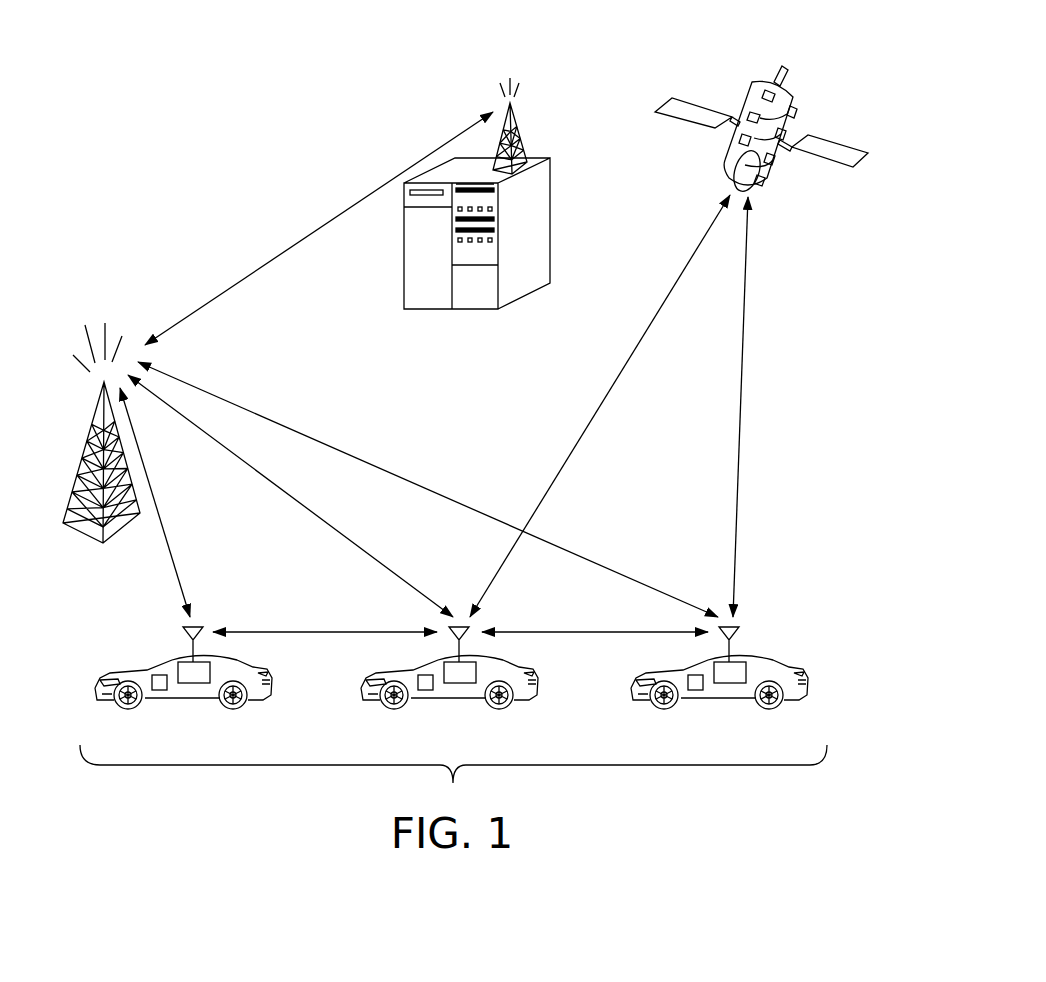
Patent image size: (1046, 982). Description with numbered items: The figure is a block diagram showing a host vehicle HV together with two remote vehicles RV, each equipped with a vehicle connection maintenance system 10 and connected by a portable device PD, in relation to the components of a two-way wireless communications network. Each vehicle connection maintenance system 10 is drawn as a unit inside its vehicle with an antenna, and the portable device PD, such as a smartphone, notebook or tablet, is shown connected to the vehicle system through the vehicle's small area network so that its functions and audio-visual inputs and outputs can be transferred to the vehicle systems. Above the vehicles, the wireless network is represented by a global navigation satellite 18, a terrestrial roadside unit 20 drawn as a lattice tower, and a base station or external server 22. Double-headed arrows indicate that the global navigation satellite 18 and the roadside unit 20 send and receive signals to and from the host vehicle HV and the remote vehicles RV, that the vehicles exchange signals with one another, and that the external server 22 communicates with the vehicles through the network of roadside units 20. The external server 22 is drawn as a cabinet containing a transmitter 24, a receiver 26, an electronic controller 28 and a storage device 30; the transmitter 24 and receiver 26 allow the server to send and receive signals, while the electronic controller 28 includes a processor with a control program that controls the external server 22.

The vehicle connection maintenance system 10 is at (193, 683).
The global navigation satellite 18 is at (740, 62).
The roadside unit 20 is at (80, 470).
The external server 22 is at (473, 309).
The transmitter 24 is at (498, 197).
The receiver 26 is at (498, 236).
The electronic controller 28 is at (415, 203).
The storage device 30 is at (487, 288).
The portable device PD is at (160, 690).
The host vehicle HV is at (266, 697).
The remote vehicle RV is at (532, 697).